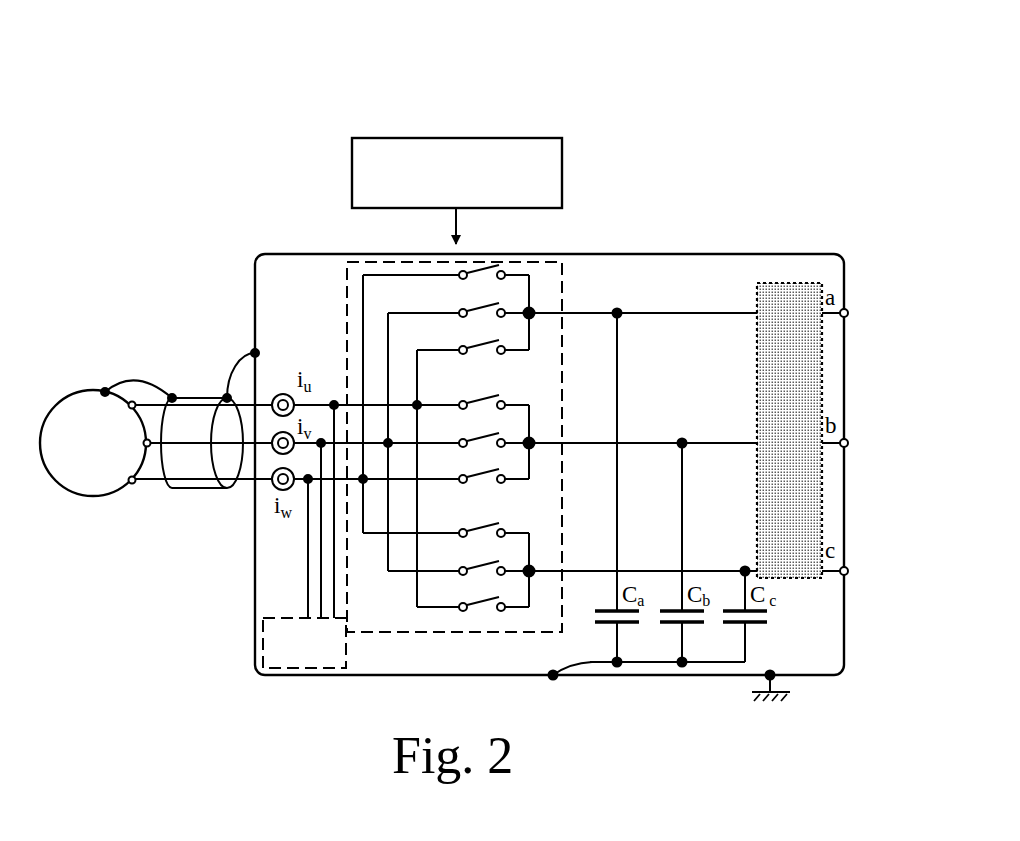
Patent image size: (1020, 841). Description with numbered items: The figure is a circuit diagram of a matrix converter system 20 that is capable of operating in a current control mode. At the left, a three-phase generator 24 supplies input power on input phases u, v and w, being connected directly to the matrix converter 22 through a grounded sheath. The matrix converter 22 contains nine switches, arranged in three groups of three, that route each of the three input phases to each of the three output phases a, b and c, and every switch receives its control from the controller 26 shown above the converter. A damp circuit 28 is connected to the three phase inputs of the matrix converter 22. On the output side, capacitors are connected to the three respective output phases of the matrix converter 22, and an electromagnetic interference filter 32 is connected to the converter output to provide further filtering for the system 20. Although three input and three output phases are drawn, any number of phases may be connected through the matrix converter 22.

The matrix converter system 20 is at (712, 92).
The matrix converter 22 is at (562, 285).
The three-phase generator 24 is at (95, 442).
The controller 26 is at (457, 191).
The damp circuit 28 is at (304, 534).
The electromagnetic interference (EMI) filter 32 is at (790, 283).